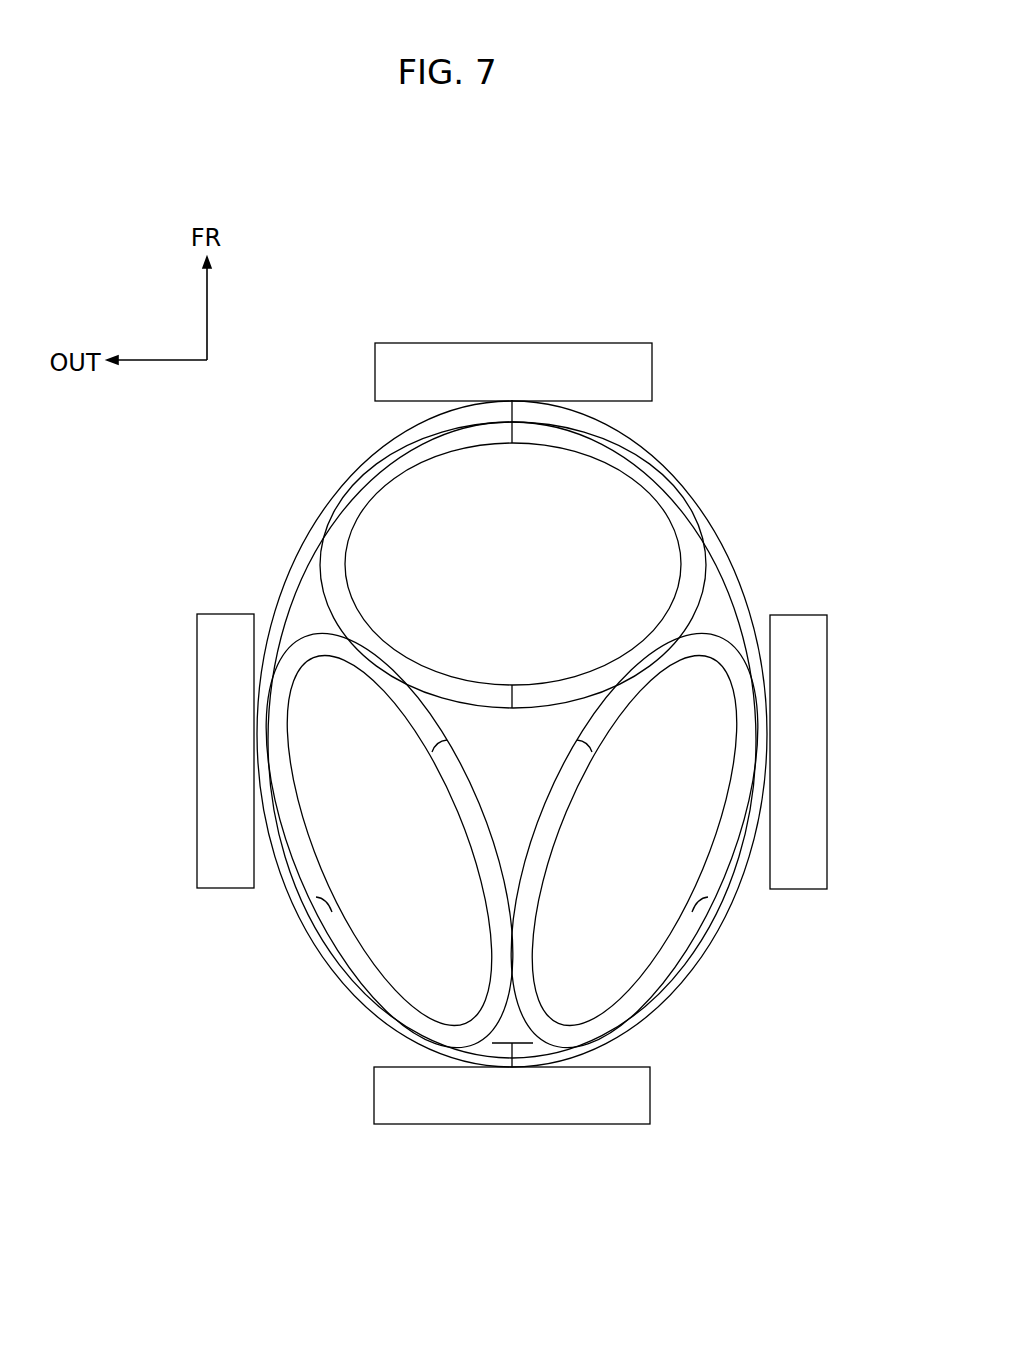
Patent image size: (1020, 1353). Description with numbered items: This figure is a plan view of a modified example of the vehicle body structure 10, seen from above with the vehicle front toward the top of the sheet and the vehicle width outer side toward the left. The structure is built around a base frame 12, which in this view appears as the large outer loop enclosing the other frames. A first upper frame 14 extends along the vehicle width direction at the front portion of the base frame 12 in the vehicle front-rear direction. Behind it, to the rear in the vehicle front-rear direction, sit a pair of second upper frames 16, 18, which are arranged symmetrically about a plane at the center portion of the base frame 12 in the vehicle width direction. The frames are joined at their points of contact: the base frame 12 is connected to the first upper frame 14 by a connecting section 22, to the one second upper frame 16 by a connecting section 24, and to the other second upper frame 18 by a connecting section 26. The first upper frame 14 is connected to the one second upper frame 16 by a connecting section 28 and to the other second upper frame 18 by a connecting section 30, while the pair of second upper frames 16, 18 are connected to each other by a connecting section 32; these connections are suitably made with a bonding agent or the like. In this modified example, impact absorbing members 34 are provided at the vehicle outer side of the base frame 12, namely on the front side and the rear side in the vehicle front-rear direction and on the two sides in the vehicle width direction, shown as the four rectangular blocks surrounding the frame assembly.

The vehicle body structure 10 is at (514, 252).
The base frame 12 is at (288, 567).
The first upper frame 14 is at (415, 468).
The second upper frame 16 is at (548, 850).
The second upper frame 18 is at (468, 850).
The connecting section 22 is at (525, 435).
The connecting section 24 is at (722, 912).
The connecting section 26 is at (305, 882).
The connecting section 28 is at (660, 672).
The connecting section 30 is at (370, 672).
The connecting section 32 is at (530, 955).
The impact absorbing member 34 is at (518, 358).